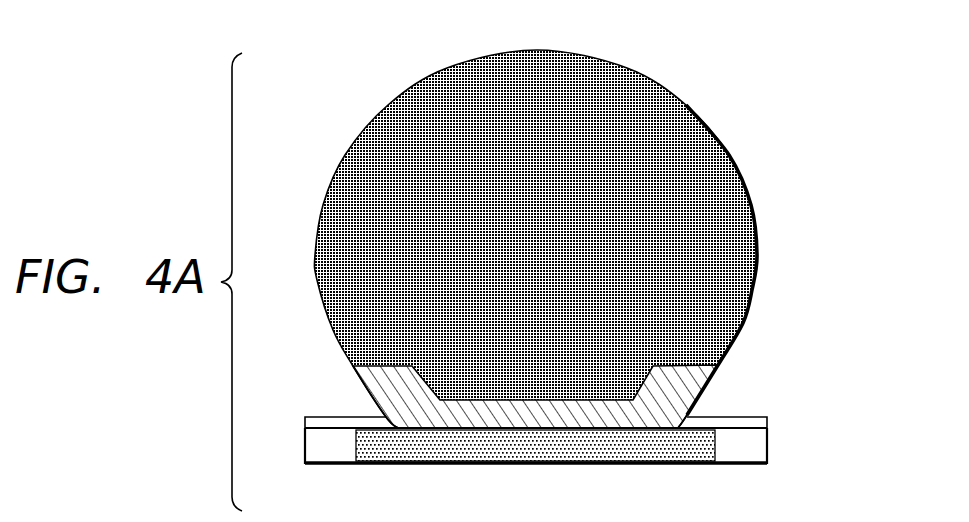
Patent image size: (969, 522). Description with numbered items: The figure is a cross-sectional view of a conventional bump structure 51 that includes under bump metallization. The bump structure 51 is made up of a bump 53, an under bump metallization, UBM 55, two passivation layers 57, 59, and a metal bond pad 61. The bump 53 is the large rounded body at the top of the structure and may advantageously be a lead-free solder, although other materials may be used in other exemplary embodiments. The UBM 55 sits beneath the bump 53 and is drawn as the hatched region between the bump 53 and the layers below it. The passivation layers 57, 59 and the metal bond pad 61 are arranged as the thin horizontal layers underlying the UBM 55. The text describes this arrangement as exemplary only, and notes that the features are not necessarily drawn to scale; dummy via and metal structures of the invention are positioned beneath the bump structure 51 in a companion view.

The bump structure 51 is at (758, 57).
The bump 53 is at (738, 208).
The under bump metallization 55 is at (700, 385).
The passivation layer 57 is at (752, 420).
The passivation layer 59 is at (753, 446).
The metal bond pad 61 is at (535, 453).